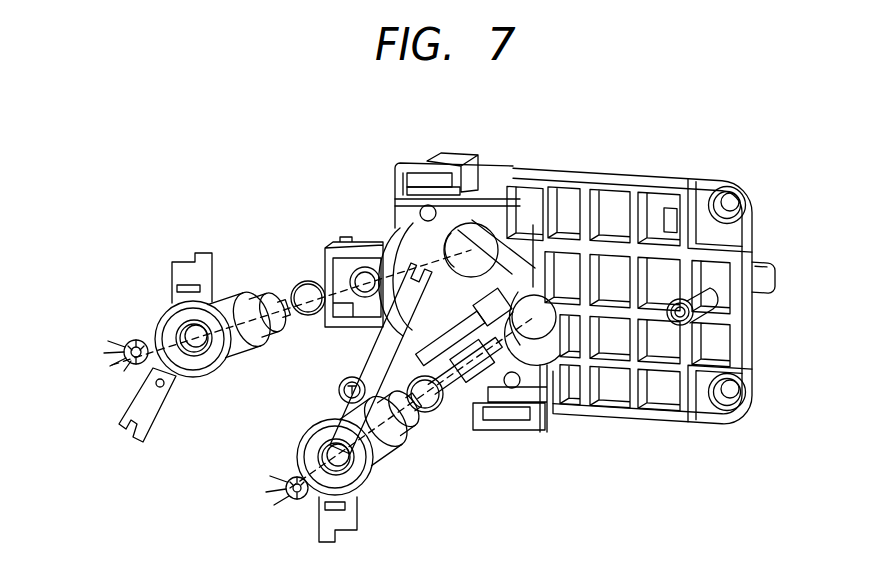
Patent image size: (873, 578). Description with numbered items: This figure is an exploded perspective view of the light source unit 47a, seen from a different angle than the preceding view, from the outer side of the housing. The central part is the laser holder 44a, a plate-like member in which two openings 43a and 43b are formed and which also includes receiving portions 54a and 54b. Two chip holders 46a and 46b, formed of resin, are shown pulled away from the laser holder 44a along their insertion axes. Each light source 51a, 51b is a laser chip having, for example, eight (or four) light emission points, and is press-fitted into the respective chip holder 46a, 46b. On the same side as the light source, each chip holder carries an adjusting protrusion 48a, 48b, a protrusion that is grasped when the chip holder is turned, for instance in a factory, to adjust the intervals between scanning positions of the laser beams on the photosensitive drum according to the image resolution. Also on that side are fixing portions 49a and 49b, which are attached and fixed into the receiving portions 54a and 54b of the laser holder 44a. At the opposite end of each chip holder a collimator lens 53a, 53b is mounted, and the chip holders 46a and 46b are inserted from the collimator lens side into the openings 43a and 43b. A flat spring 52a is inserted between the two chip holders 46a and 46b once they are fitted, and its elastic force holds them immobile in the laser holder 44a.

The light source unit 47a is at (680, 136).
The laser holder 44a is at (747, 329).
The opening 43a is at (527, 300).
The opening 43b is at (468, 240).
The receiving portion 54a is at (505, 410).
The receiving portion 54b is at (423, 183).
The adjusting protrusion 48a is at (395, 390).
The adjusting protrusion 48b is at (147, 410).
The fixing portion 49a is at (330, 522).
The fixing portion 49b is at (184, 275).
The chip holder 46a is at (383, 430).
The chip holder 46b is at (243, 310).
The collimator lens 53a is at (440, 405).
The collimator lens 53b is at (306, 298).
The light source 51a is at (285, 497).
The light source 51b is at (112, 355).
The flat spring 52a is at (373, 348).